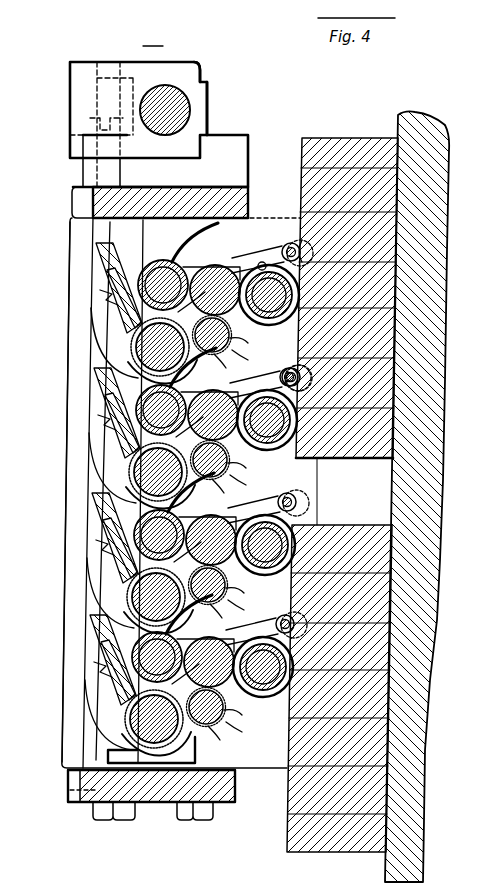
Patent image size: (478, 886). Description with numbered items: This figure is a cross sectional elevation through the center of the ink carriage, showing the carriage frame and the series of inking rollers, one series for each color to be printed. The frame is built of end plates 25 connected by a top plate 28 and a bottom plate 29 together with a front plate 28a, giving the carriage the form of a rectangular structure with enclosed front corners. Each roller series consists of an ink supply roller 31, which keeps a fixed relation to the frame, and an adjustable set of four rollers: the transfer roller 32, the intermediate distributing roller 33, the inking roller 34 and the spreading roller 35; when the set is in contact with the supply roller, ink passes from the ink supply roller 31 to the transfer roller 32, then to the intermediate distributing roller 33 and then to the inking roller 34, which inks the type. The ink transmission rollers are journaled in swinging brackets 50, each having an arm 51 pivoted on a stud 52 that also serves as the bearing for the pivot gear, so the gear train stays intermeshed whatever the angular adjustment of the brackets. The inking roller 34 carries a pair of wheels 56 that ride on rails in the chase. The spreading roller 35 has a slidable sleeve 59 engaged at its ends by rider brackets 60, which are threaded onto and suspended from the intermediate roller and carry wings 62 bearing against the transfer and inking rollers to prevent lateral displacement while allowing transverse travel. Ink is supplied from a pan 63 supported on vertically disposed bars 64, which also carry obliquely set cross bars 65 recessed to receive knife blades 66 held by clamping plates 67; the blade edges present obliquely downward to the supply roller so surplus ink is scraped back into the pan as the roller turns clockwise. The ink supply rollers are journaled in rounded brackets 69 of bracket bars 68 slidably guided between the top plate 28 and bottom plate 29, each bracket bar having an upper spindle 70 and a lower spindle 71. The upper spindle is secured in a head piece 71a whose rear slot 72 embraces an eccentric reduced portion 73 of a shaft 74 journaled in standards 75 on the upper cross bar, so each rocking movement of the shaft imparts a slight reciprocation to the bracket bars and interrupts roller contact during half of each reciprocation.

The end plate 25 is at (180, 744).
The top plate 28 is at (232, 200).
The front plate 28a is at (76, 492).
The bottom plate 29 is at (236, 792).
The ink supply roller 31 is at (226, 366).
The transfer roller 32 is at (176, 262).
The intermediate distributing roller 33 is at (205, 242).
The inking roller 34 is at (260, 263).
The spreading roller 35 is at (249, 345).
The swinging bracket 50 is at (285, 246).
The arm 51 is at (287, 250).
The stud 52 is at (292, 242).
The wheel 56 is at (303, 320).
The slidable sleeve 59 is at (233, 608).
The rider bracket 60 is at (275, 324).
The wing 62 is at (188, 309).
The pan 63 is at (117, 413).
The vertically disposed bar 64 is at (116, 272).
The transverse cross bar 65 is at (130, 256).
The knife blade 66 is at (130, 333).
The clamping plate 67 is at (106, 296).
The bracket bar 68 is at (184, 389).
The rounded bracket 69 is at (190, 372).
The upper spindle 70 is at (107, 173).
The lower spindle 71 is at (82, 78).
The head piece 71a is at (153, 39).
The slot 72 is at (178, 80).
The eccentric reduced portion 73 is at (196, 104).
The shaft 74 is at (190, 128).
The standard 75 is at (160, 161).